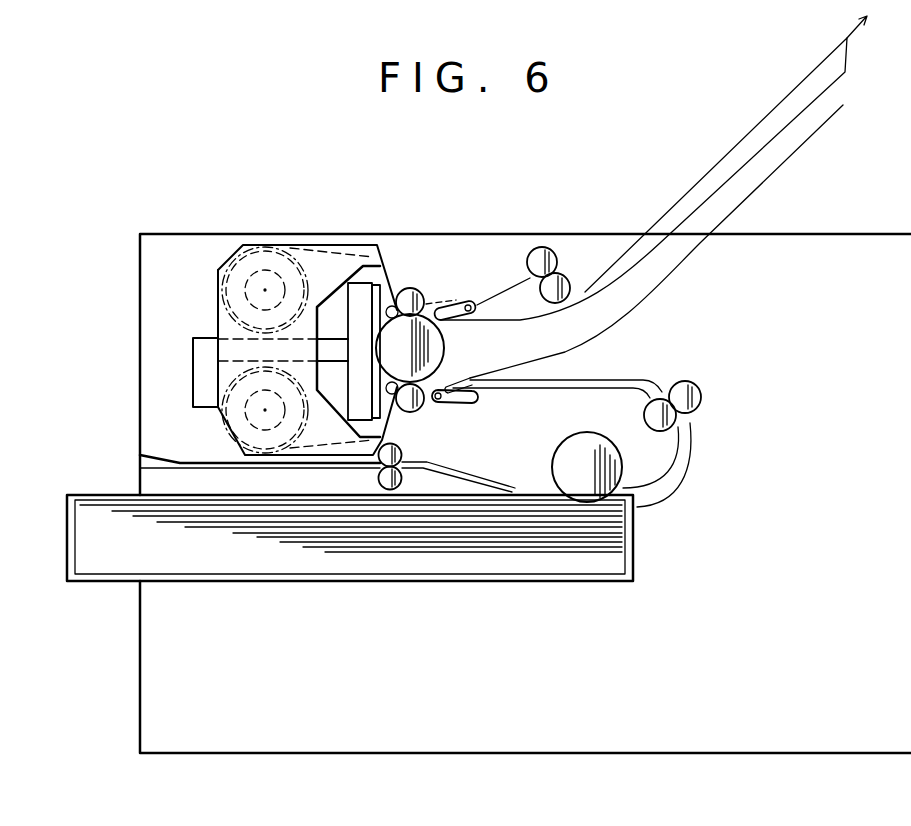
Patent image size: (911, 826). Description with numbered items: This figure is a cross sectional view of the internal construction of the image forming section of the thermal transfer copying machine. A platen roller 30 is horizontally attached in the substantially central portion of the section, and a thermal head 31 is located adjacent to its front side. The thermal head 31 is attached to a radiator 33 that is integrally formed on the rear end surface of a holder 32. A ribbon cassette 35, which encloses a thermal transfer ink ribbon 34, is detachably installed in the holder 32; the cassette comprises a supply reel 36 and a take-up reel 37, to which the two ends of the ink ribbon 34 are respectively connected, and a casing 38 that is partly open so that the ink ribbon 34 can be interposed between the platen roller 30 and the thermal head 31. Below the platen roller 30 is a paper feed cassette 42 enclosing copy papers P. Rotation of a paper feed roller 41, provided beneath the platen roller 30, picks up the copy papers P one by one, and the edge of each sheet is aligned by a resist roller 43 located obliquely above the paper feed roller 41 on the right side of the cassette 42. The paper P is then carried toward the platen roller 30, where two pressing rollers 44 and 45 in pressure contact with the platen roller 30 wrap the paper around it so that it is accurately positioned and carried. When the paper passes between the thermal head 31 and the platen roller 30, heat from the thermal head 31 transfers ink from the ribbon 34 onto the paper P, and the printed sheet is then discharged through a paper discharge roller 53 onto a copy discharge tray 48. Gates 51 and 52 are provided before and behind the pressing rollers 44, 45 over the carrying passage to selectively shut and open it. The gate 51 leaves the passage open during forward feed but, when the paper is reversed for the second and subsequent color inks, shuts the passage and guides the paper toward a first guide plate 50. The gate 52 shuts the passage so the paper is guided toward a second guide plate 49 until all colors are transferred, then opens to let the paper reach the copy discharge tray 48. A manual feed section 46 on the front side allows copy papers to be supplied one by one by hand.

The platen roller 30 is at (444, 350).
The thermal head 31 is at (378, 283).
The holder 32 is at (193, 356).
The radiator 33 is at (360, 285).
The thermal transfer ink ribbon 34 is at (388, 286).
The ribbon cassette 35 is at (275, 243).
The supply reel 36 is at (247, 282).
The take-up reel 37 is at (247, 405).
The casing 38 is at (218, 305).
The paper feed roller 41 is at (560, 444).
The paper feed cassette 42 is at (625, 537).
The resist roller 43 is at (697, 386).
The pressing roller 44 is at (413, 412).
The pressing roller 45 is at (418, 292).
The manual feed section 46 is at (334, 468).
The copy discharge tray 48 is at (847, 38).
The second guide plate 49 is at (763, 143).
The first guide plate 50 is at (803, 145).
The gate 51 is at (470, 403).
The gate 52 is at (462, 301).
The paper discharge roller 53 is at (540, 250).
The copy paper P is at (477, 580).